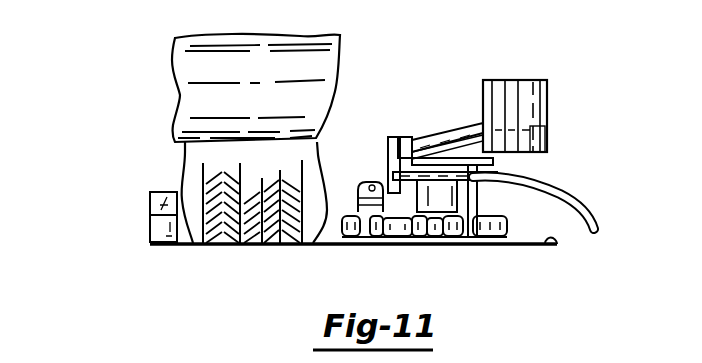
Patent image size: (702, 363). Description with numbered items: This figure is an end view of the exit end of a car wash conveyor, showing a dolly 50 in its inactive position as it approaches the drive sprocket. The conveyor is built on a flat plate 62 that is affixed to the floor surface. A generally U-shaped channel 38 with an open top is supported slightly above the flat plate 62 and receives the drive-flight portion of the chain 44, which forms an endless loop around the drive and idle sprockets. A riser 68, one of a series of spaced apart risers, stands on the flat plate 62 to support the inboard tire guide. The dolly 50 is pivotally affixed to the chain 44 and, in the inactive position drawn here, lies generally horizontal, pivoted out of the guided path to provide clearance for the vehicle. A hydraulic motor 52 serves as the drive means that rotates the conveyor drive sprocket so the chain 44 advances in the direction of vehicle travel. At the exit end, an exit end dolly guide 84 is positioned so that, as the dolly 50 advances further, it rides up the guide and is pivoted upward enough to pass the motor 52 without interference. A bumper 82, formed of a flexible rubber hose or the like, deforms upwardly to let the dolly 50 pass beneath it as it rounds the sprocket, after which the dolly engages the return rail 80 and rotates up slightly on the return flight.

The channel 38 is at (150, 198).
The riser 68 is at (150, 230).
The flat plate 62 is at (206, 245).
The chain 44 is at (328, 246).
The dolly 50 is at (399, 130).
The exit end dolly guide 84 is at (455, 127).
The hydraulic motor 52 is at (510, 80).
The bumper 82 is at (560, 188).
The return rail 80 is at (557, 240).